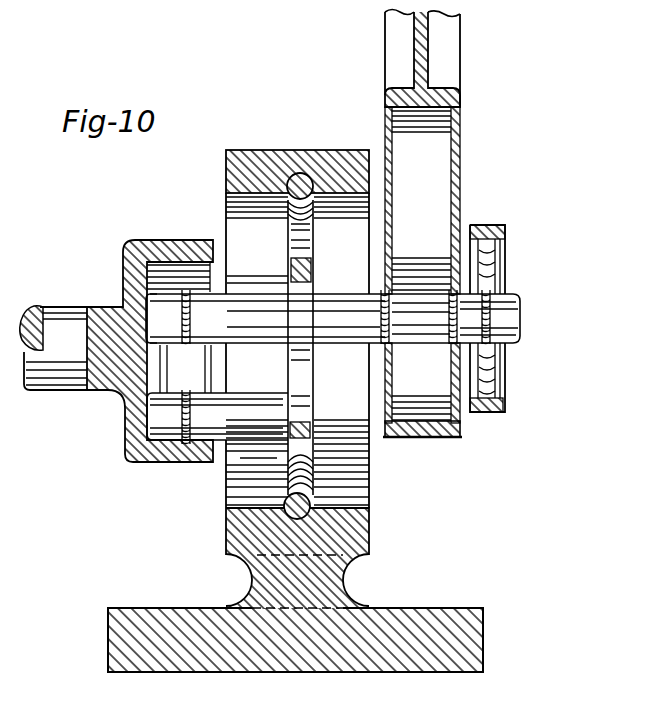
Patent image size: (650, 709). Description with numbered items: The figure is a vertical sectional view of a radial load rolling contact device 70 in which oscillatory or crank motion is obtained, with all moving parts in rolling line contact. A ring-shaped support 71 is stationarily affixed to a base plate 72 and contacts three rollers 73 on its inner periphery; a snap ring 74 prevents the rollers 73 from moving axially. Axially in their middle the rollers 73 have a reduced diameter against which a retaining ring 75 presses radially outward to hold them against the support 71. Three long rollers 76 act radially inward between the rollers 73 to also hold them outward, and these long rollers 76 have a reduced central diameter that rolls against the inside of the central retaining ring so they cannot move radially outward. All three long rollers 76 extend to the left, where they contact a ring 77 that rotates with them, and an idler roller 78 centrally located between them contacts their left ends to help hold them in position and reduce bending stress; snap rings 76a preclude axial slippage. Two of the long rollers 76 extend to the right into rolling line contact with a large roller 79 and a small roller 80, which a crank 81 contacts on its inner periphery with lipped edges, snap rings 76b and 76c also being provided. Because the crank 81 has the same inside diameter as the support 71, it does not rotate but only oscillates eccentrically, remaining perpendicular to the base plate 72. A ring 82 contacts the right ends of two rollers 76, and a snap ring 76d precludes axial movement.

The device 70 is at (547, 126).
The ring-shaped support 71 is at (245, 151).
The base plate 72 is at (123, 607).
The rollers 73 is at (350, 256).
The snap ring 74 is at (303, 175).
The retaining ring 75 is at (289, 274).
The long rollers 76 is at (256, 423).
The snap rings 76a is at (217, 417).
The snap ring 76b is at (383, 286).
The snap ring 76c is at (482, 322).
The snap ring 76d is at (498, 312).
The ring 77 is at (172, 240).
The idler roller 78 is at (211, 347).
The large roller 79 is at (436, 216).
The small roller 80 is at (430, 378).
The crank 81 is at (462, 75).
The ring 82 is at (488, 226).